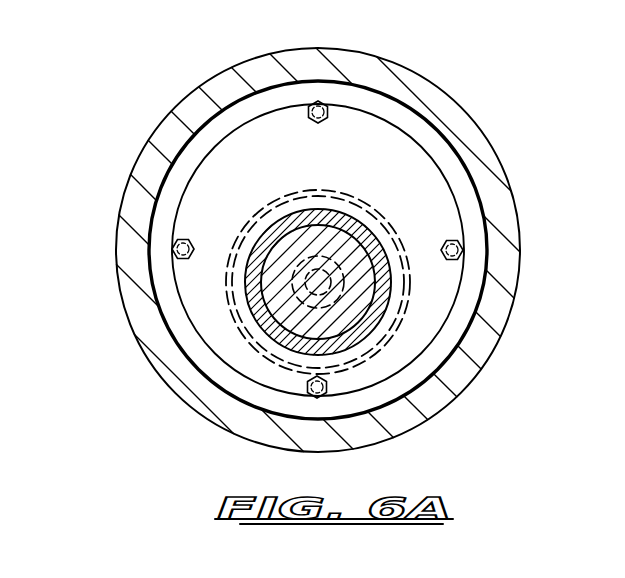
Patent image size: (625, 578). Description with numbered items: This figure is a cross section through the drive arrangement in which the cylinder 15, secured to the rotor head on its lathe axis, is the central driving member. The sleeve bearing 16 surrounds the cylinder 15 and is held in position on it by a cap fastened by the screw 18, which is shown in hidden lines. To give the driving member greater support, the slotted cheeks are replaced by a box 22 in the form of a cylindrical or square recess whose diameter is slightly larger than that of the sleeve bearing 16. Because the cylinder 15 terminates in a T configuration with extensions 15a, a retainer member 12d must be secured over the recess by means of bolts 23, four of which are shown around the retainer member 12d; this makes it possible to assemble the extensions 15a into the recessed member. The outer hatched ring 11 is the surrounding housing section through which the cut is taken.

The housing ring 11 is at (427, 91).
The retainer member 12d is at (448, 295).
The cylinder 15 is at (305, 232).
The extensions 15a is at (372, 347).
The sleeve bearing 16 is at (250, 290).
The screw 18 is at (247, 312).
The box 22 is at (397, 330).
The bolts 23 is at (330, 112).